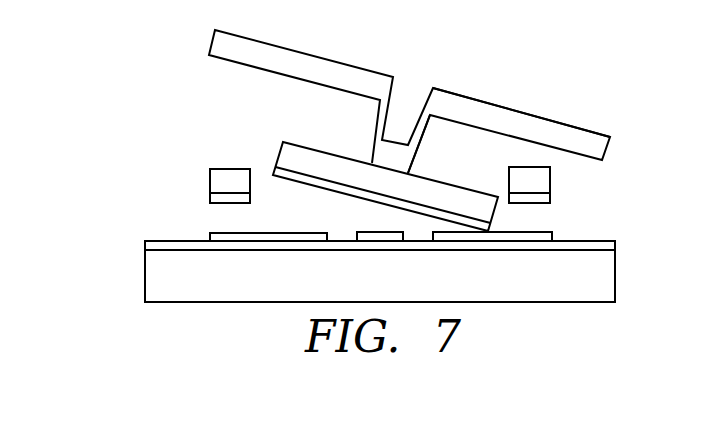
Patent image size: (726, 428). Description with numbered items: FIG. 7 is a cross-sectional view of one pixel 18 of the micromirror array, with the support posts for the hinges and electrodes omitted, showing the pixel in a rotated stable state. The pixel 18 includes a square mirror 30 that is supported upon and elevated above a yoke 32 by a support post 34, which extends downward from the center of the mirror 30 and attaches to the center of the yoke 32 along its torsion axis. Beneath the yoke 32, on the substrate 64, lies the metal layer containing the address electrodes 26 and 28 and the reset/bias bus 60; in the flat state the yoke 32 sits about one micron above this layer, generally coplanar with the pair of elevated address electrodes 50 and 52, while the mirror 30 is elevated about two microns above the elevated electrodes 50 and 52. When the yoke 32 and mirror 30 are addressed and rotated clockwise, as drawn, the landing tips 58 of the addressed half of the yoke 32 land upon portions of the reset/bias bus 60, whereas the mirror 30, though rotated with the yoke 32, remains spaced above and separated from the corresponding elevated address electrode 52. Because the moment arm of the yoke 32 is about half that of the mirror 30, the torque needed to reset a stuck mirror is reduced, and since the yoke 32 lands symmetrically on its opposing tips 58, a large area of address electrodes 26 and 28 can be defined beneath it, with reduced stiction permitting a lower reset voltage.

The pixel 18 is at (499, 68).
The mirror 30 is at (573, 125).
The yoke 32 is at (293, 140).
The support post 34 is at (427, 127).
The elevated address electrode 50 is at (208, 180).
The elevated address electrode 52 is at (552, 178).
The address electrode 26 is at (213, 230).
The address electrode 28 is at (542, 232).
The reset/bias bus 60 is at (360, 227).
The landing tips 58 is at (491, 231).
The substrate 64 is at (618, 272).